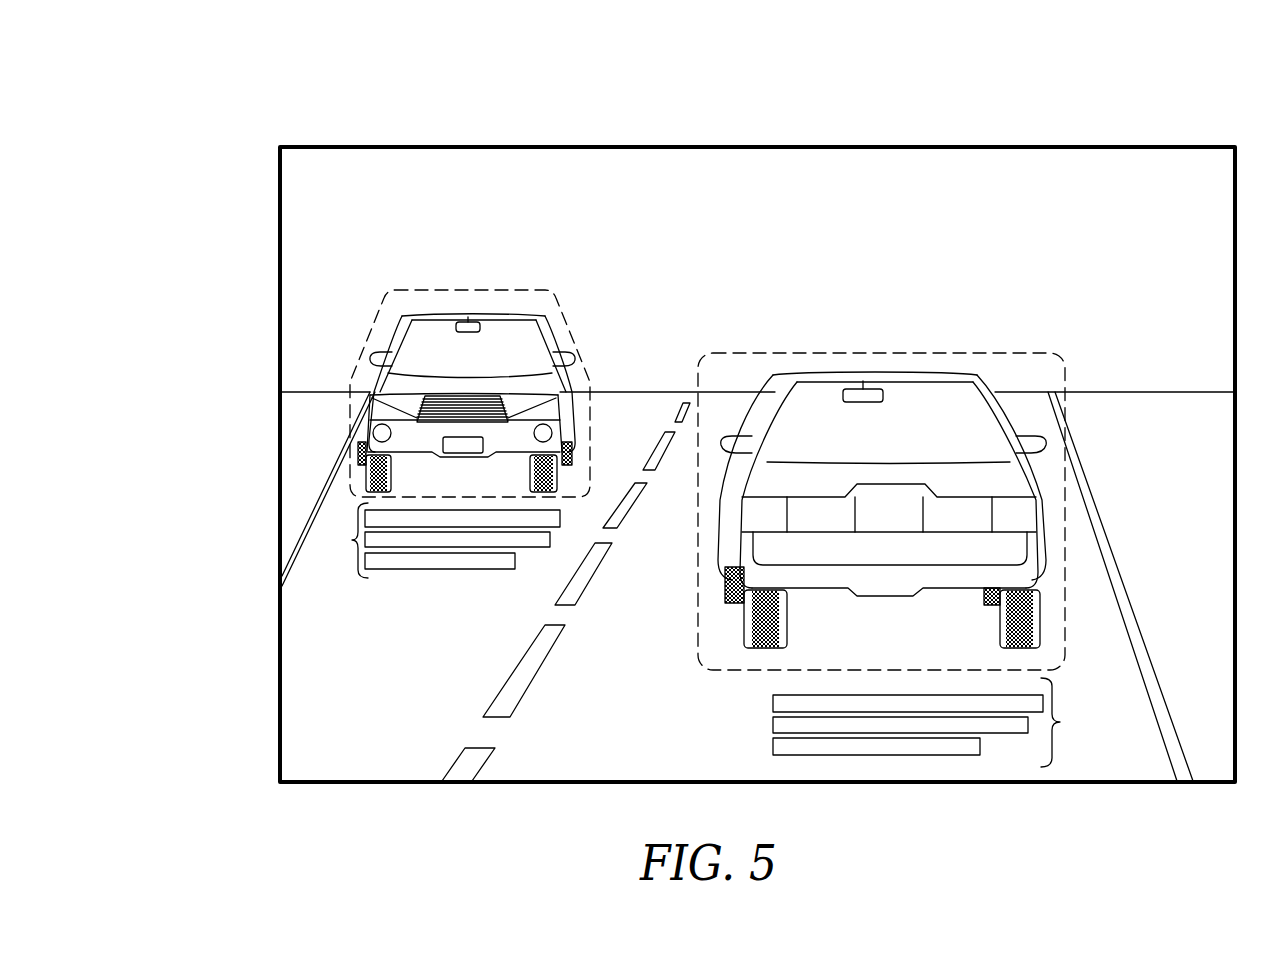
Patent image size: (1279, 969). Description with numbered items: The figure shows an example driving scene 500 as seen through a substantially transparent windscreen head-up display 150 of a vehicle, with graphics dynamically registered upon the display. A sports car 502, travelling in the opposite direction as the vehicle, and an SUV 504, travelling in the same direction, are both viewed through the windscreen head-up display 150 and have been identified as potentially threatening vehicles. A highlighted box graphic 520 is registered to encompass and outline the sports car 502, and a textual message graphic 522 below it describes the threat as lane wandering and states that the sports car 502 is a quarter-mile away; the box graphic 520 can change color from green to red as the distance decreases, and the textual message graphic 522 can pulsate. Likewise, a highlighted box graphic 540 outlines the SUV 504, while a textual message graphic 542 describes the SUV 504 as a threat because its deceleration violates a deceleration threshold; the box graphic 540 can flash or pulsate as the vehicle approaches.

The driving scene 500 is at (297, 117).
The substantially transparent windscreen head-up display 150 is at (672, 146).
The highlighted box graphic 520 is at (360, 358).
The sports car 502 is at (362, 426).
The textual message graphic 522 is at (352, 540).
The highlighted box graphic 540 is at (932, 352).
The SUV 504 is at (992, 482).
The textual message graphic 542 is at (1061, 723).